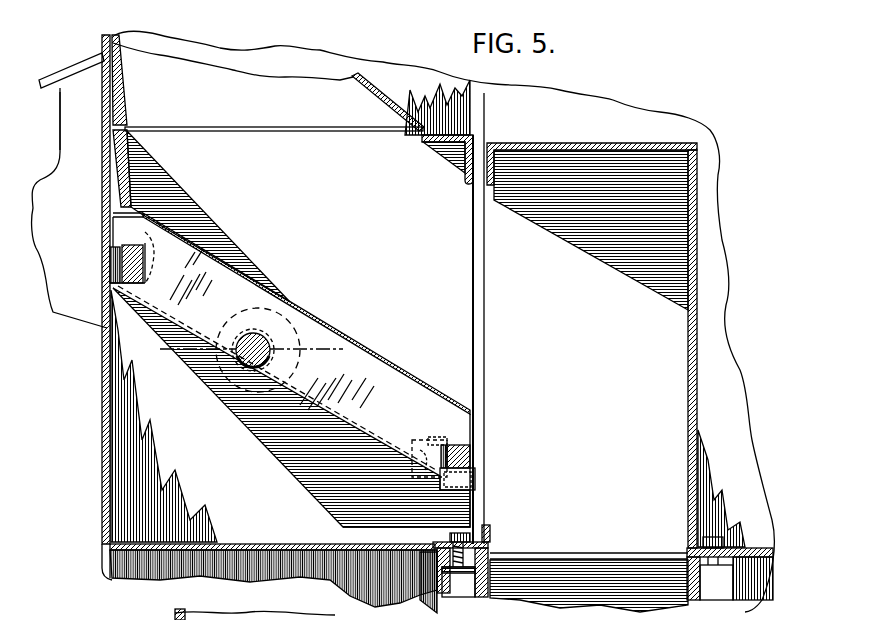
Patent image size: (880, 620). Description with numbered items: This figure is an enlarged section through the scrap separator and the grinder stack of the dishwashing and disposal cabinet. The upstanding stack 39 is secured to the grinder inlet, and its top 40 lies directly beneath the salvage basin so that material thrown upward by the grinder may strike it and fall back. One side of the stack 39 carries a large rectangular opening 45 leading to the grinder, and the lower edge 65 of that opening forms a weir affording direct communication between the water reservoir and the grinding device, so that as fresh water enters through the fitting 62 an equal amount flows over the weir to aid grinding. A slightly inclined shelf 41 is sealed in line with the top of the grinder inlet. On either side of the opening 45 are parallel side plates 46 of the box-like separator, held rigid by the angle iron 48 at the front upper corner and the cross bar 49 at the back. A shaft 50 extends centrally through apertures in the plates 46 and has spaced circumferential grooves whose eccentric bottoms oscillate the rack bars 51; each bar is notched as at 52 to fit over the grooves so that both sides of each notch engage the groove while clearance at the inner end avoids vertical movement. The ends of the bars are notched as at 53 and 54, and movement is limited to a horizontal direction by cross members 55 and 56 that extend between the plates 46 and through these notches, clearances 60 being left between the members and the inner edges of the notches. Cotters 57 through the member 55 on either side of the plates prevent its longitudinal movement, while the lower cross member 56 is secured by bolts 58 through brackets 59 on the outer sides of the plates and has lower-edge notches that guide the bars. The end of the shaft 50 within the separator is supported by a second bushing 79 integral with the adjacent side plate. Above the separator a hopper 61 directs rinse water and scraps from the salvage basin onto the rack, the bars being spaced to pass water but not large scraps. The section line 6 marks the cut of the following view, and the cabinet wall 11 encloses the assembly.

The cabinet wall 11 is at (102, 420).
The fitting 62 is at (73, 134).
The hopper 61 is at (127, 107).
The cross bar 49 is at (128, 177).
The side plates 46 is at (274, 214).
The angle iron 48 is at (447, 143).
The rectangular opening 45 is at (486, 243).
The top 40 is at (522, 143).
The stack 39 is at (593, 381).
The shelf 41 is at (258, 544).
The lower edge 65 is at (490, 528).
The rack bars 51 is at (398, 372).
The notch 53 is at (114, 288).
The cross member 55 is at (107, 255).
The cotters 57 is at (150, 246).
The clearances 60 is at (145, 285).
The section line 6- 6 is at (199, 342).
The notches 52 is at (240, 345).
The second bushing 79 is at (287, 313).
The shaft 50 is at (272, 358).
The bolts 58 is at (440, 441).
The brackets 59 is at (412, 447).
The lower cross member 56 is at (473, 447).
The notch 54 is at (477, 470).